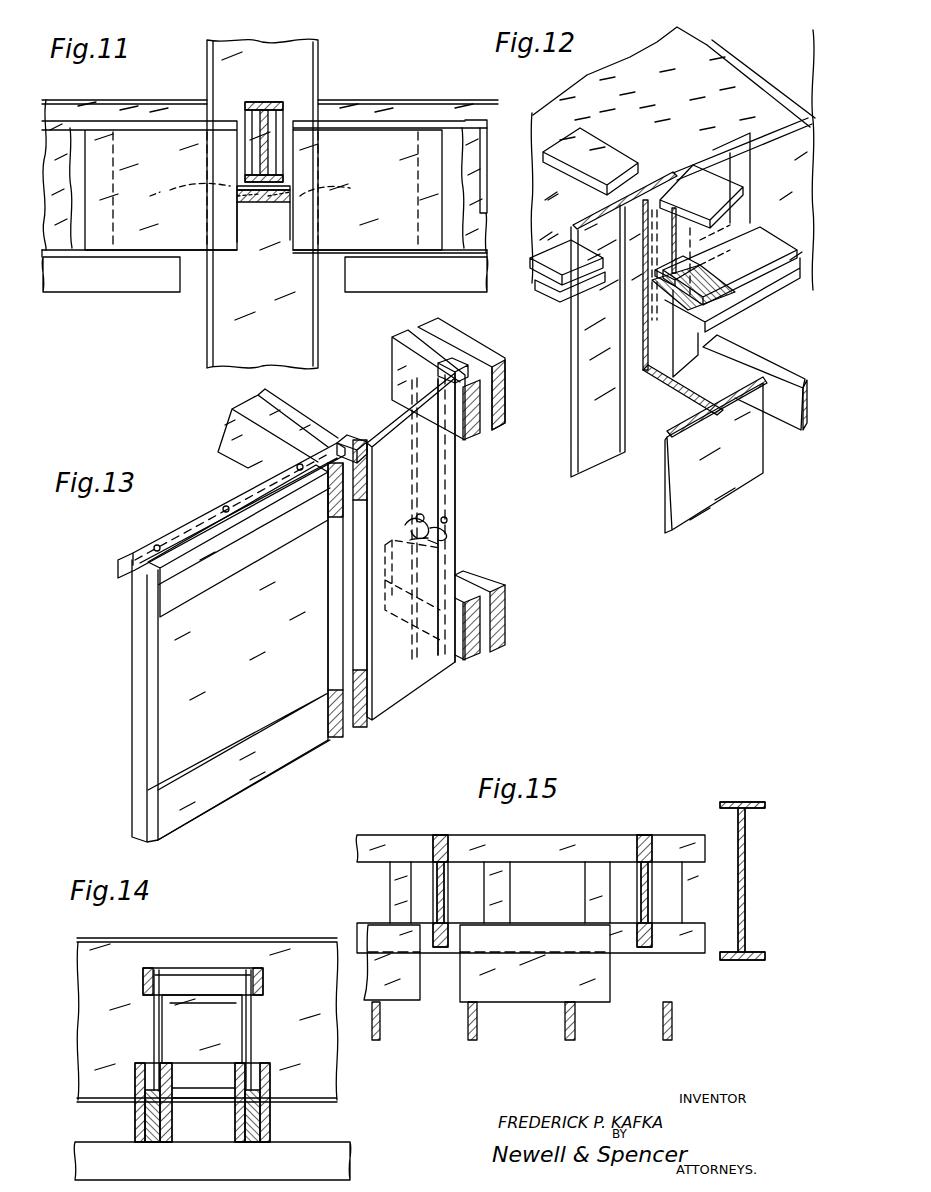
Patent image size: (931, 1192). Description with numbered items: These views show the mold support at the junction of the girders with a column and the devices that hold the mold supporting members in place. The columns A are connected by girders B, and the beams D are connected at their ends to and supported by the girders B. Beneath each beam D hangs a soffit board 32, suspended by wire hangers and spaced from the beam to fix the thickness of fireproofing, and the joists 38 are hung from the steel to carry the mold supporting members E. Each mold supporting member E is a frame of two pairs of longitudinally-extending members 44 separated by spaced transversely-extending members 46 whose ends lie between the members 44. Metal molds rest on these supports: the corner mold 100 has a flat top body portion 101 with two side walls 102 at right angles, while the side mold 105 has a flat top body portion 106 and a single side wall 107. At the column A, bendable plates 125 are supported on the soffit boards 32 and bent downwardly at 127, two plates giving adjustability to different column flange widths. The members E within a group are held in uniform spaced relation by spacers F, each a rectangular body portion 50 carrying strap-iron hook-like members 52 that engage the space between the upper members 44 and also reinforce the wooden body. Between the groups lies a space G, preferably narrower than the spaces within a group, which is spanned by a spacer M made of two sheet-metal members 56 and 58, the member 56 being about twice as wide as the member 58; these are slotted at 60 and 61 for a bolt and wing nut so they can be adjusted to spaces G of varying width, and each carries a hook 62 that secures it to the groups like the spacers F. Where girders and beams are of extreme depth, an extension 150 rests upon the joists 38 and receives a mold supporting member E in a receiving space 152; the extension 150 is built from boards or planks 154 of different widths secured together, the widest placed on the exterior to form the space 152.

In FIG. 11, the soffit board 32 is at (264, 202).
In FIG. 12, the soffit board 32 is at (726, 295).
In FIG. 11, the joist 38 is at (110, 288).
In FIG. 14, the joist 38 is at (320, 1150).
In FIG. 15, the joist 38 is at (468, 1028).
In FIG. 13, the longitudinally-extending member 44 is at (265, 389).
In FIG. 14, the longitudinally-extending member 44 is at (232, 988).
In FIG. 15, the longitudinally-extending member 44 is at (678, 862).
In FIG. 14, the transversely-extending member 46 is at (154, 1029).
In FIG. 15, the transversely-extending member 46 is at (584, 888).
In FIG. 13, the rectangular body portion 50 is at (149, 718).
In FIG. 15, the rectangular body portion 50 is at (448, 891).
In FIG. 13, the hook-like member 52 is at (118, 569).
In FIG. 14, the hook-like member 52 is at (142, 977).
In FIG. 13, the member 56 is at (428, 492).
In FIG. 13, the member 58 is at (436, 464).
In FIG. 13, the slot 60 is at (430, 546).
In FIG. 13, the slot 61 is at (446, 520).
In FIG. 13, the hook 62 is at (362, 412).
In FIG. 11, the corner mold 100 is at (175, 138).
In FIG. 12, the corner mold 100 is at (697, 164).
In FIG. 11, the main flat top body portion 101 is at (135, 128).
In FIG. 12, the main flat top body portion 101 is at (713, 158).
In FIG. 11, the side wall 102 is at (158, 240).
In FIG. 12, the side wall 102 is at (750, 172).
In FIG. 11, the side mold 105 is at (105, 113).
In FIG. 12, the side mold 105 is at (594, 74).
In FIG. 11, the main flat top body portion 106 is at (152, 112).
In FIG. 12, the main flat top body portion 106 is at (658, 44).
In FIG. 11, the side wall 107 is at (450, 173).
In FIG. 12, the side wall 107 is at (811, 75).
In FIG. 11, the plate 125 is at (285, 179).
In FIG. 12, the plate 125 is at (760, 262).
In FIG. 11, the downwardly bent portion 127 is at (187, 203).
In FIG. 12, the downwardly bent portion 127 is at (731, 330).
In FIG. 14, the extension 150 is at (172, 1118).
In FIG. 15, the extension 150 is at (596, 980).
In FIG. 14, the mold supporting member receiving space 152 is at (270, 1078).
In FIG. 14, the board or plank 154 is at (264, 1122).
In FIG. 11, the column A is at (218, 308).
In FIG. 12, the column A is at (644, 452).
In FIG. 11, the girder B is at (114, 113).
In FIG. 12, the girder B is at (588, 140).
In FIG. 14, the girder B is at (207, 1005).
In FIG. 15, the girder B is at (740, 802).
In FIG. 11, the beam D is at (255, 102).
In FIG. 12, the beam D is at (723, 206).
In FIG. 14, the mold supporting member E is at (142, 990).
In FIG. 15, the mold supporting member E is at (554, 846).
In FIG. 13, the spacer F is at (144, 693).
In FIG. 14, the spacer F is at (190, 970).
In FIG. 15, the spacer F is at (452, 850).
In FIG. 13, the space G is at (316, 410).
In FIG. 13, the spacer M is at (377, 439).